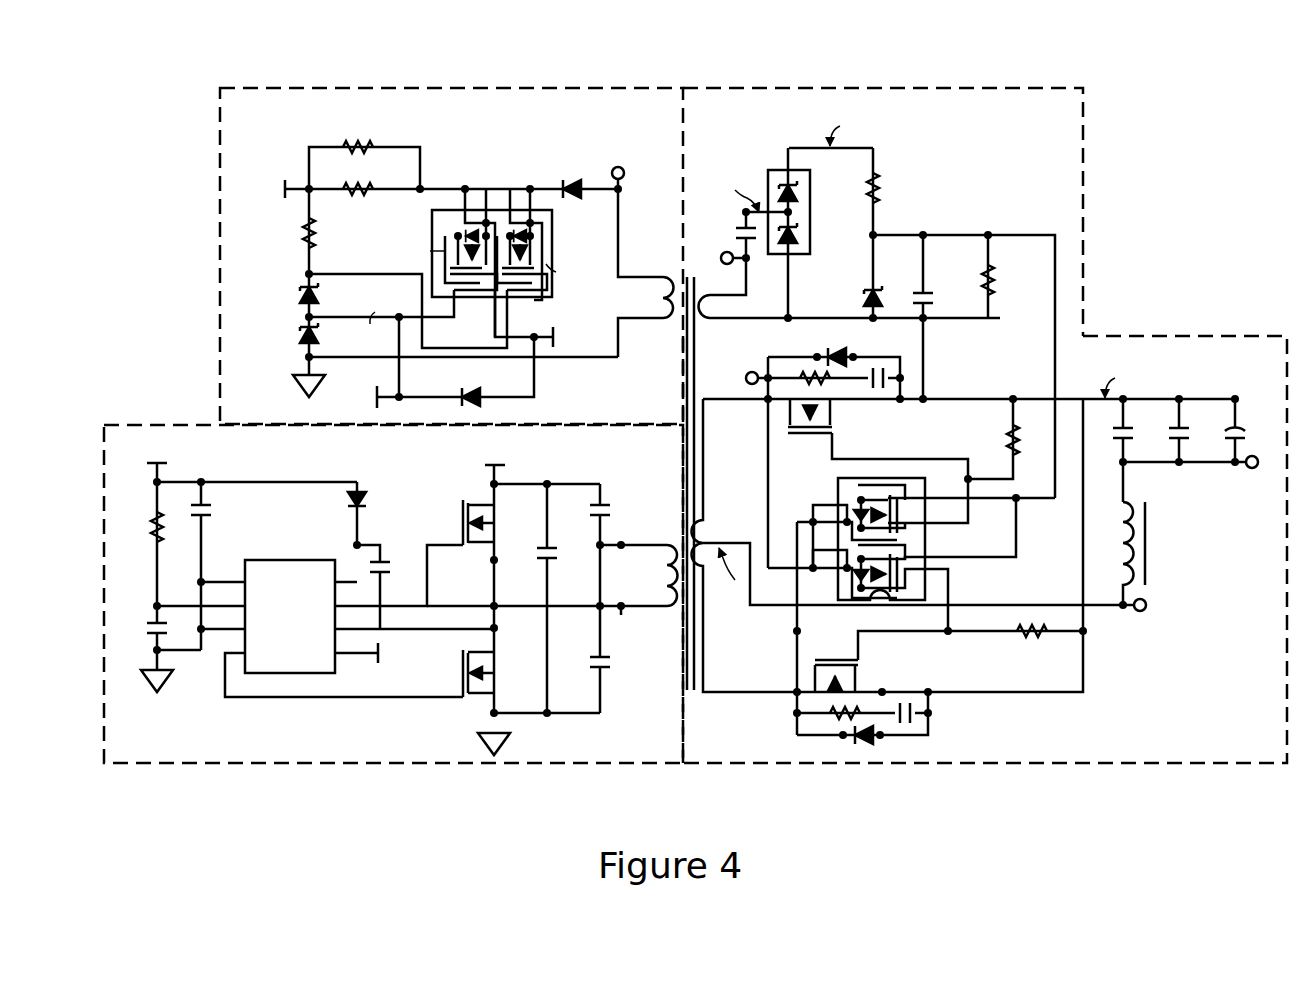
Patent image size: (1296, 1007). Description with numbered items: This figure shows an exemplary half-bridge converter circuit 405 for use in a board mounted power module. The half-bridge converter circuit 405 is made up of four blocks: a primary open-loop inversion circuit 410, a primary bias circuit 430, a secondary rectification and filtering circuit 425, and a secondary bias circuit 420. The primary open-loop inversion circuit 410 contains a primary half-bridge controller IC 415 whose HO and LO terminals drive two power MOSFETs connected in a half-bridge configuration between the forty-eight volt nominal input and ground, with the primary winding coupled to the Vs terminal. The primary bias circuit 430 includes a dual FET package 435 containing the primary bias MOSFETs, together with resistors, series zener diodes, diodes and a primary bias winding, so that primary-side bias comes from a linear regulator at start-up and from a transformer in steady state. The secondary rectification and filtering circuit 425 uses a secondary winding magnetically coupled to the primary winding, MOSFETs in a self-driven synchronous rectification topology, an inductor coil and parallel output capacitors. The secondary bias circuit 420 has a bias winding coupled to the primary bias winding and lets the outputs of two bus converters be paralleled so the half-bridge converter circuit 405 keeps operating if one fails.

The half-bridge converter circuit 405 is at (1123, 100).
The primary open-loop inversion circuit 410 is at (243, 743).
The primary half-bridge controller IC 415 is at (288, 578).
The secondary bias circuit 420 is at (941, 108).
The secondary rectification and filtering circuit 425 is at (1161, 745).
The primary bias circuit 430 is at (550, 108).
The dual FET package 435 is at (444, 223).